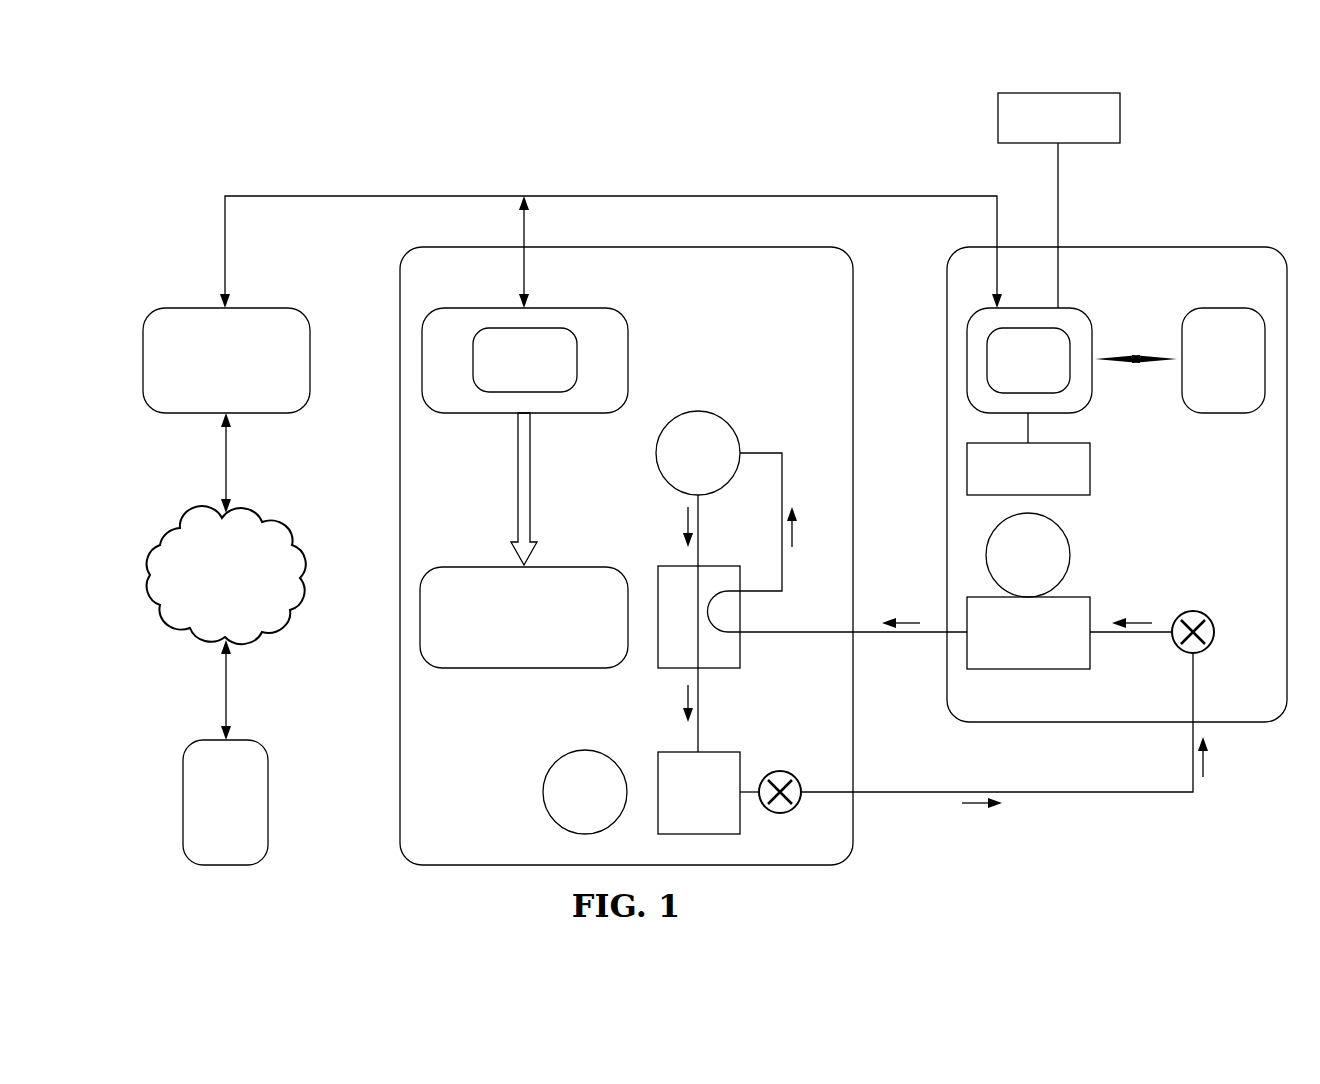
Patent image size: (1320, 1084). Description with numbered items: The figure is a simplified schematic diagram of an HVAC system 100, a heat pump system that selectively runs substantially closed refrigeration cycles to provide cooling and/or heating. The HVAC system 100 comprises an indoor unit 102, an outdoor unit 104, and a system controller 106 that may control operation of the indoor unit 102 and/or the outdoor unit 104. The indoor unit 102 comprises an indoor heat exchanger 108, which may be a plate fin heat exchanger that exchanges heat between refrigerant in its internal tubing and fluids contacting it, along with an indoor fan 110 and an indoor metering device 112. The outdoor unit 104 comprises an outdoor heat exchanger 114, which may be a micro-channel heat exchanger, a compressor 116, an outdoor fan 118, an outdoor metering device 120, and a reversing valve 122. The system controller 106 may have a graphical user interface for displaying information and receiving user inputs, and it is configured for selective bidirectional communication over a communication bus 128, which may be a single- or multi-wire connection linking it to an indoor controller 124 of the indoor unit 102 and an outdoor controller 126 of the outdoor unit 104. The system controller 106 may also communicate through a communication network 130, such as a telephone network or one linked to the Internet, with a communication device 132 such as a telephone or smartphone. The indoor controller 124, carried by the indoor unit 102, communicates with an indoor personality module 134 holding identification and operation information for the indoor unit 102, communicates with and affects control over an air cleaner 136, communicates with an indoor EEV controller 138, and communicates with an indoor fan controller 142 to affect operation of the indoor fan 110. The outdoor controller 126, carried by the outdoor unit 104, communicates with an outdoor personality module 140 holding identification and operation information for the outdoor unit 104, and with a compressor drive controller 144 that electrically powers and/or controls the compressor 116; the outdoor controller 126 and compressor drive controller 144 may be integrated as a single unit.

The HVAC system 100 is at (378, 140).
The indoor unit 102 is at (1195, 242).
The outdoor unit 104 is at (398, 305).
The system controller 106 is at (205, 373).
The indoor heat exchanger 108 is at (1008, 645).
The indoor fan 110 is at (1007, 568).
The indoor metering device 112 is at (1209, 648).
The outdoor heat exchanger 114 is at (678, 805).
The compressor 116 is at (677, 466).
The outdoor fan 118 is at (564, 805).
The outdoor metering device 120 is at (796, 808).
The reversing valve 122 is at (742, 650).
The indoor controller 124 is at (1095, 342).
The outdoor controller 126 is at (473, 307).
The communication bus 128 is at (612, 194).
The communication network 130 is at (205, 590).
The communication device 132 is at (205, 815).
The indoor personality module 134 is at (1008, 373).
The air cleaner 136 is at (1038, 131).
The indoor EEV controller 138 is at (1203, 373).
The outdoor personality module 140 is at (504, 373).
The indoor fan controller 142 is at (1008, 482).
The compressor drive controller 144 is at (503, 631).